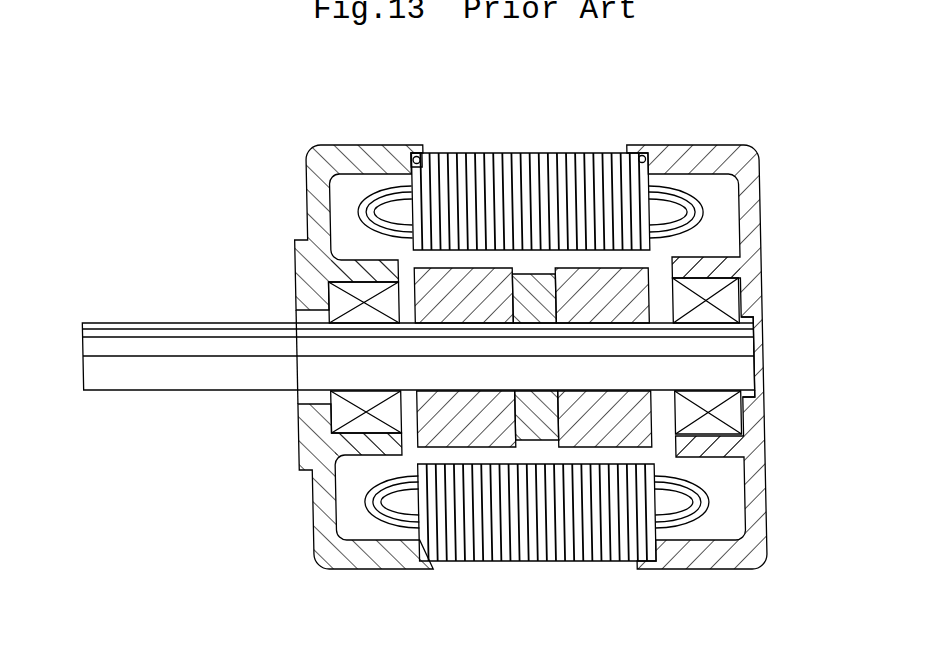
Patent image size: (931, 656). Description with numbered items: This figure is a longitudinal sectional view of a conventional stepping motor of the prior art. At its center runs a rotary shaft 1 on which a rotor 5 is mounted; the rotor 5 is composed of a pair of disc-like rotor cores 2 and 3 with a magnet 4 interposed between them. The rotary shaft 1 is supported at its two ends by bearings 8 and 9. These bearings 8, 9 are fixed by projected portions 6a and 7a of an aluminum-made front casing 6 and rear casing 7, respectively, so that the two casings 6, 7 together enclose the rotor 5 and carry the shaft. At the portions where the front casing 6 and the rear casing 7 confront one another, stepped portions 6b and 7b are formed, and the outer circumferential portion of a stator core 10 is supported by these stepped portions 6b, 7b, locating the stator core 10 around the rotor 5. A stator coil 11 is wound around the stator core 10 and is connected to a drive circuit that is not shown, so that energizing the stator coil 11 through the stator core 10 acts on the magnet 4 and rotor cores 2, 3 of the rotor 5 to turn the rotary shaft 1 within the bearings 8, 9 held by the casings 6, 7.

The rotary shaft 1 is at (117, 322).
The rotor core 2 is at (392, 282).
The rotor core 3 is at (743, 281).
The magnet 4 is at (540, 290).
The rotor 5 is at (619, 252).
The front casing 6 is at (316, 175).
The projected portion 6a is at (368, 262).
The stepped portion 6b is at (412, 157).
The rear casing 7 is at (757, 158).
The projected portion 7a is at (697, 260).
The stepped portion 7b is at (650, 162).
The bearing 8 is at (328, 297).
The bearing 9 is at (745, 312).
The stator core 10 is at (531, 158).
The stator coil 11 is at (372, 192).